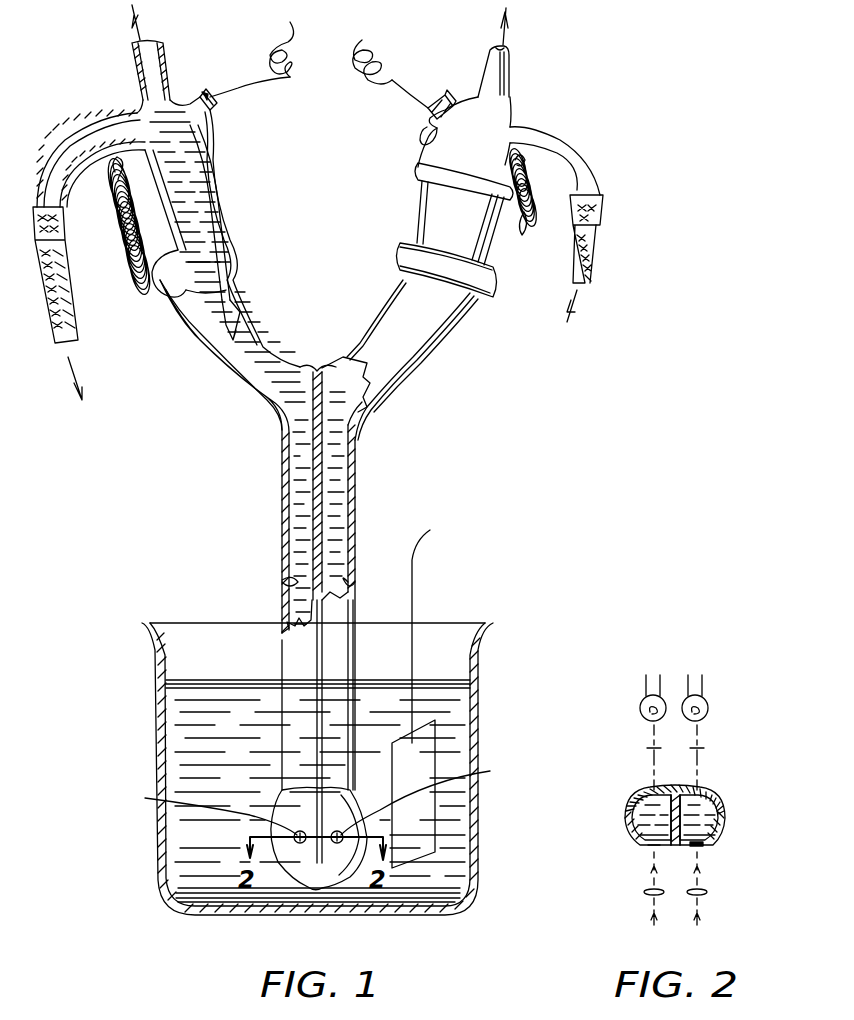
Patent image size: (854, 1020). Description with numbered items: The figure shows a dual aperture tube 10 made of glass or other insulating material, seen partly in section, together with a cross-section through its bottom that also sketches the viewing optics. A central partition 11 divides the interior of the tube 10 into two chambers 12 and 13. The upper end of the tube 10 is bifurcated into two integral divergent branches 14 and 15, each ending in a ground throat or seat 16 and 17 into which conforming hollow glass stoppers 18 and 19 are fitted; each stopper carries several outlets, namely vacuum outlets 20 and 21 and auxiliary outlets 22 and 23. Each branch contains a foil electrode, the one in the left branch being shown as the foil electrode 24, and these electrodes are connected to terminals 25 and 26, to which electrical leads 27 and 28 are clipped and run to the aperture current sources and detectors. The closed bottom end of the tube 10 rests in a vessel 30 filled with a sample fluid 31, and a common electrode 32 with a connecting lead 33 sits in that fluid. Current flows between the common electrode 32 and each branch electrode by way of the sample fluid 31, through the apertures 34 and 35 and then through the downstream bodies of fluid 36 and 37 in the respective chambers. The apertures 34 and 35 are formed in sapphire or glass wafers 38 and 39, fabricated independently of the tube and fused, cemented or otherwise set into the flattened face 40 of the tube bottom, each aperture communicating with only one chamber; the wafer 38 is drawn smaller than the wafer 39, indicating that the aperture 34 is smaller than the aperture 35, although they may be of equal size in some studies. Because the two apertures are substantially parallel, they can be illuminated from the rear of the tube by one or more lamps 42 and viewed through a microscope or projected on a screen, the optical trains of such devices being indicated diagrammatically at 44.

In FIG. 1, the dual aperture tube 10 is at (368, 531).
In FIG. 2, the dual aperture tube 10 is at (737, 812).
In FIG. 1, the central partition 11 is at (322, 556).
In FIG. 2, the central partition 11 is at (693, 796).
In FIG. 1, the chamber 12 is at (355, 582).
In FIG. 1, the chamber 13 is at (282, 580).
In FIG. 1, the divergent branch 14 is at (405, 337).
In FIG. 1, the divergent branch 15 is at (265, 347).
In FIG. 1, the ground throat or seat 16 is at (440, 218).
In FIG. 1, the ground throat or seat 17 is at (217, 201).
In FIG. 1, the stopper 18 is at (514, 112).
In FIG. 1, the stopper 19 is at (160, 105).
In FIG. 1, the vacuum outlet 20 is at (488, 56).
In FIG. 1, the vacuum outlet 21 is at (132, 60).
In FIG. 1, the auxiliary outlet 22 is at (575, 156).
In FIG. 1, the auxiliary outlet 23 is at (66, 143).
In FIG. 1, the foil electrode 24 is at (232, 253).
In FIG. 1, the terminal 25 is at (440, 98).
In FIG. 1, the terminal 26 is at (210, 92).
In FIG. 1, the electrical lead 27 is at (362, 40).
In FIG. 1, the electrical lead 28 is at (258, 49).
In FIG. 1, the vessel 30 is at (478, 728).
In FIG. 1, the sample fluid 31 is at (190, 746).
In FIG. 1, the electrode 32 is at (427, 801).
In FIG. 1, the connecting lead 33 is at (412, 565).
In FIG. 1, the aperture 34 is at (337, 843).
In FIG. 2, the aperture 34 is at (700, 850).
In FIG. 1, the aperture 35 is at (300, 843).
In FIG. 2, the aperture 35 is at (652, 850).
In FIG. 1, the downstream body of fluid 36 is at (343, 484).
In FIG. 1, the downstream body of fluid 37 is at (297, 457).
In FIG. 1, the wafer 38 is at (429, 797).
In FIG. 1, the wafer 39 is at (201, 811).
In FIG. 1, the flattened face 40 is at (312, 860).
In FIG. 2, the flattened face 40 is at (675, 848).
In FIG. 2, the lamp 42 is at (690, 692).
In FIG. 2, the optical train 44 is at (687, 898).